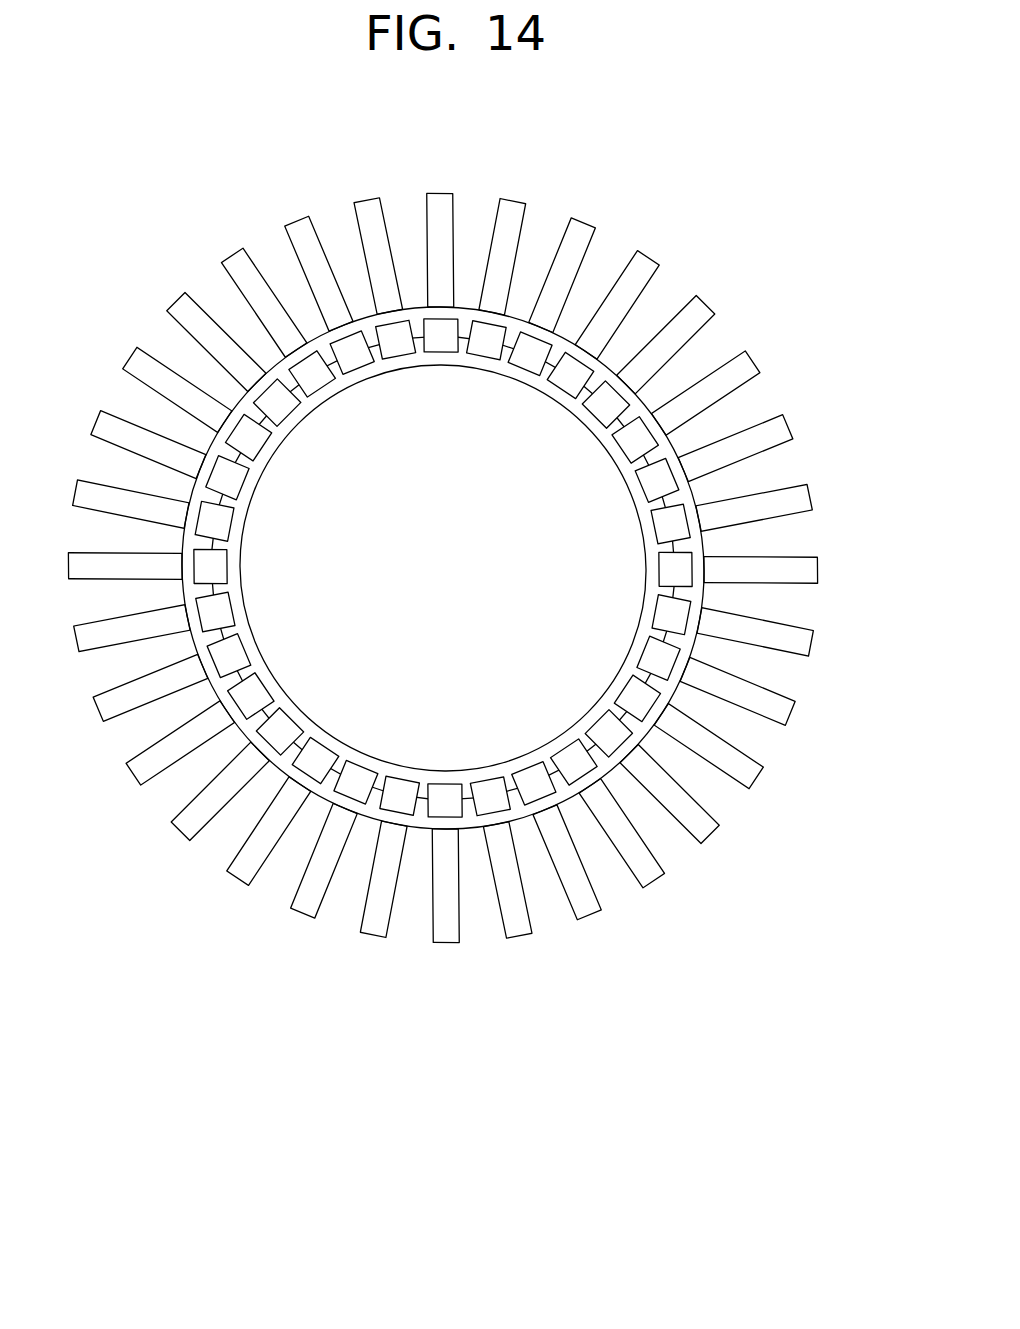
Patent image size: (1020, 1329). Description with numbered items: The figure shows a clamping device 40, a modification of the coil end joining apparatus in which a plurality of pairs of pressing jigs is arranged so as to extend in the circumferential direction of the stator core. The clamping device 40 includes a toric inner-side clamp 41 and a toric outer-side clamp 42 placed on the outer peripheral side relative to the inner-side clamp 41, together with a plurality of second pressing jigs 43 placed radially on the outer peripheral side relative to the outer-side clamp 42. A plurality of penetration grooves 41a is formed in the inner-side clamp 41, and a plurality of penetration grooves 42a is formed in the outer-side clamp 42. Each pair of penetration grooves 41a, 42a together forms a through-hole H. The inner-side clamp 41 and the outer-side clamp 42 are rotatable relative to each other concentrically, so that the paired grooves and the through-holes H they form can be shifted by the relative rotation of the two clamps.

The clamping device 40 is at (476, 643).
The inner-side clamp 41 is at (643, 547).
The penetration groove 41a is at (442, 482).
The outer-side clamp 42 is at (700, 544).
The penetration groove 42a is at (441, 330).
The second pressing jig 43 is at (735, 373).
The through-hole H is at (418, 330).